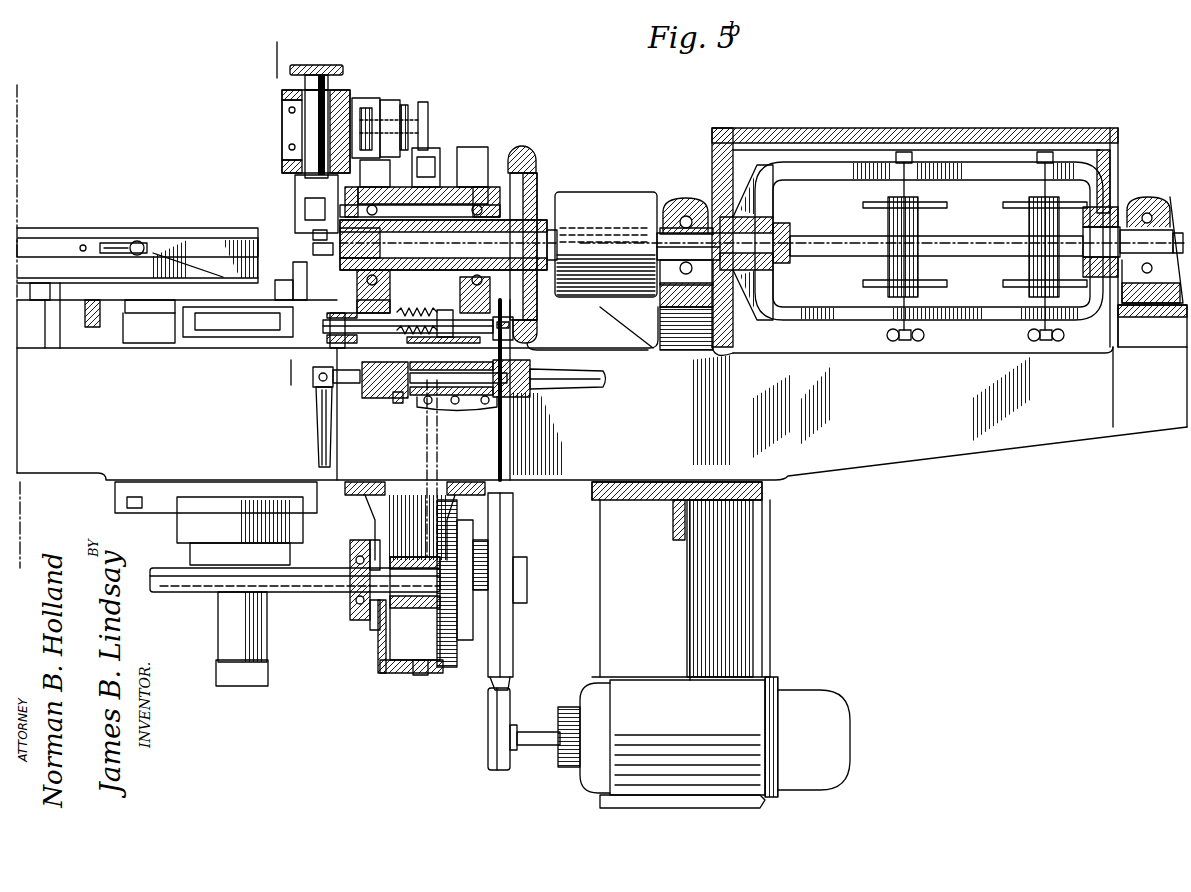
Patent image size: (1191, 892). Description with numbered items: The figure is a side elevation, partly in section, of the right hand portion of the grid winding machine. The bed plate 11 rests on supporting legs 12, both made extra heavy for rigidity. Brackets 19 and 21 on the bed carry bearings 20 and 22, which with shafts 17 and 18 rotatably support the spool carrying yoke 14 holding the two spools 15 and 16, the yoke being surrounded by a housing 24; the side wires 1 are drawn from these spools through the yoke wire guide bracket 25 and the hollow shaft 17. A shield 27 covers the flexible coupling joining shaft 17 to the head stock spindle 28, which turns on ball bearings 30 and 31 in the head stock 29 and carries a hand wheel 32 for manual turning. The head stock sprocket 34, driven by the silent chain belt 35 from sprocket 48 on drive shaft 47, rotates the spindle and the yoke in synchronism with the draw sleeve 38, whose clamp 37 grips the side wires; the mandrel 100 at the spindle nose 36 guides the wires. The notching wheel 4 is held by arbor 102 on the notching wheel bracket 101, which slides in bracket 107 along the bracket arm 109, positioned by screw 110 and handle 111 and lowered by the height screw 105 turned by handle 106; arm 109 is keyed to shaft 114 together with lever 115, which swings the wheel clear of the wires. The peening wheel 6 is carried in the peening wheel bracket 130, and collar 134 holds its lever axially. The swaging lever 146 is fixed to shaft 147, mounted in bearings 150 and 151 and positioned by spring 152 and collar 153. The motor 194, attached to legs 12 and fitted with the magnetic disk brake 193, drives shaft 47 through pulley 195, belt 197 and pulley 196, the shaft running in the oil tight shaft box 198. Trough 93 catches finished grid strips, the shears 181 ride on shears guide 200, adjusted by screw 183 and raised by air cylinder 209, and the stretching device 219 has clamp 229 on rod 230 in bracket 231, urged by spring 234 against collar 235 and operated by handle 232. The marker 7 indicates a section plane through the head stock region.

The side wires 1 is at (810, 240).
The notching wheel 4 is at (313, 236).
The peening wheel 6 is at (315, 254).
The section line 7 is at (269, 64).
The bed plate 11 is at (977, 440).
The supporting legs 12 is at (755, 607).
The spool carrying yoke 14 is at (1002, 170).
The spool 15 is at (886, 210).
The spool 16 is at (1013, 213).
The hollow shaft 17 is at (662, 240).
The shaft 18 is at (1112, 223).
The bracket 19 is at (1150, 198).
The bearing 20 is at (1180, 320).
The bracket 21 is at (667, 197).
The bearing 22 is at (693, 313).
The housing 24 is at (790, 119).
The yoke wire guide bracket 25 is at (783, 224).
The shield 27 is at (606, 192).
The head stock spindle 28 is at (424, 242).
The head stock 29 is at (462, 197).
The ball bearing 30 is at (512, 195).
The ball bearing 31 is at (360, 320).
The hand wheel 32 is at (527, 147).
The head stock sprocket 34 is at (412, 200).
The silent chain belt 35 is at (426, 454).
The head stock spindle nose 36 is at (347, 205).
The clamp 37 is at (128, 241).
The draw sleeve 38 is at (56, 238).
The drive shaft 47 is at (175, 553).
The sprocket 48 is at (431, 587).
The trough 93 is at (193, 230).
The mandrel 100 is at (448, 245).
The notching wheel bracket 101 is at (300, 203).
The notching wheel arbor 102 is at (300, 225).
The notching wheel height screw 105 is at (292, 105).
The handle 106 is at (325, 70).
The bracket 107 is at (290, 132).
The bracket arm 109 is at (392, 105).
The screw 110 is at (358, 113).
The handle 111 is at (423, 127).
The shaft 114 is at (450, 153).
The lever 115 is at (432, 150).
The peening wheel bracket 130 is at (300, 267).
The collar 134 is at (538, 334).
The swaging lever 146 is at (395, 326).
The shaft 147 is at (328, 343).
The bearing 150 is at (372, 344).
The bearing 151 is at (513, 318).
The spring 152 is at (417, 312).
The collar 153 is at (447, 312).
The shears 181 is at (266, 300).
The screw 183 is at (161, 315).
The magnetic disk brake 193 is at (808, 680).
The main electric driving motor 194 is at (582, 782).
The pulley 195 is at (488, 728).
The pulley 196 is at (513, 633).
The belt 197 is at (497, 678).
The shaft box 198 is at (378, 658).
The shears guide 200 is at (203, 348).
The air cylinder 209 is at (267, 626).
The stretching device 219 is at (410, 408).
The clamp 229 is at (318, 387).
The rod 230 is at (517, 391).
The bracket 231 is at (476, 413).
The handle 232 is at (572, 390).
The spring 234 is at (385, 397).
The collar 235 is at (393, 408).